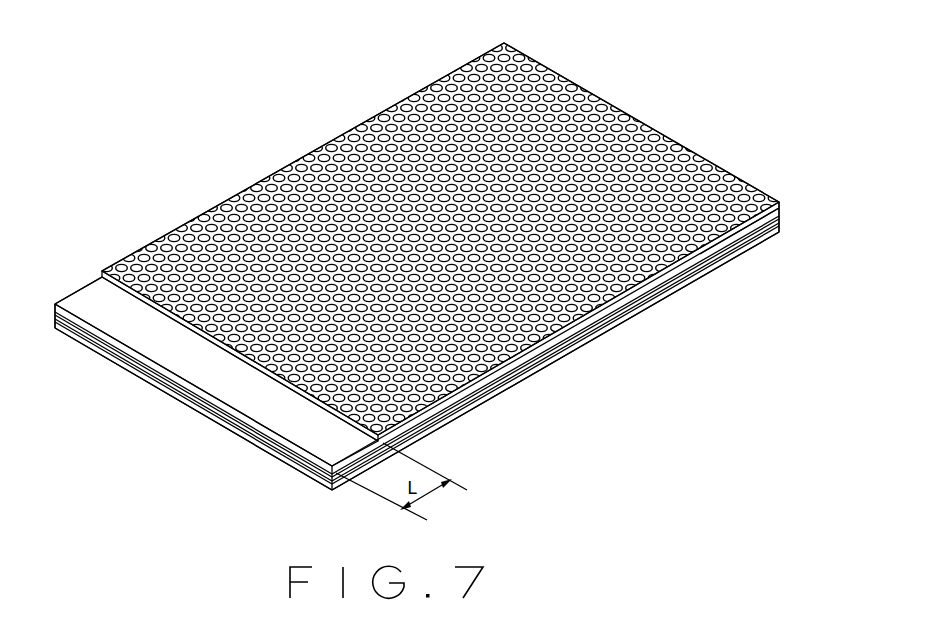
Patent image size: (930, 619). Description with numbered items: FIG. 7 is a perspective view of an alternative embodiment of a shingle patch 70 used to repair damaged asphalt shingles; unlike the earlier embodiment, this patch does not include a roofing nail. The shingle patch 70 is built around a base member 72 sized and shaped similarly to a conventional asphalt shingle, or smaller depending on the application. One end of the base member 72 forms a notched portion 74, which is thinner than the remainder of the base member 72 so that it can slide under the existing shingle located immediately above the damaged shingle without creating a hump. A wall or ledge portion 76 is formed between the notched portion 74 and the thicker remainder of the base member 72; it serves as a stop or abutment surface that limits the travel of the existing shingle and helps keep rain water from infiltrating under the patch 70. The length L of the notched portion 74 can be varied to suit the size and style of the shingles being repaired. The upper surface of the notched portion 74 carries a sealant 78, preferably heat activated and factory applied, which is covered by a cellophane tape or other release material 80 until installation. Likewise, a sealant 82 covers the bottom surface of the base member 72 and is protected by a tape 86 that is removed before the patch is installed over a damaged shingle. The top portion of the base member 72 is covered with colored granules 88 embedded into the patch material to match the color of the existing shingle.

The shingle patch 70 is at (325, 84).
The base member 72 is at (772, 215).
The notched portion 74 is at (100, 351).
The wall or ledge portion 76 is at (153, 247).
The sealant 78 is at (333, 491).
The release material 80 is at (88, 298).
The sealant 82 is at (176, 398).
The tape 86 is at (548, 362).
The colored granules 88 is at (500, 60).